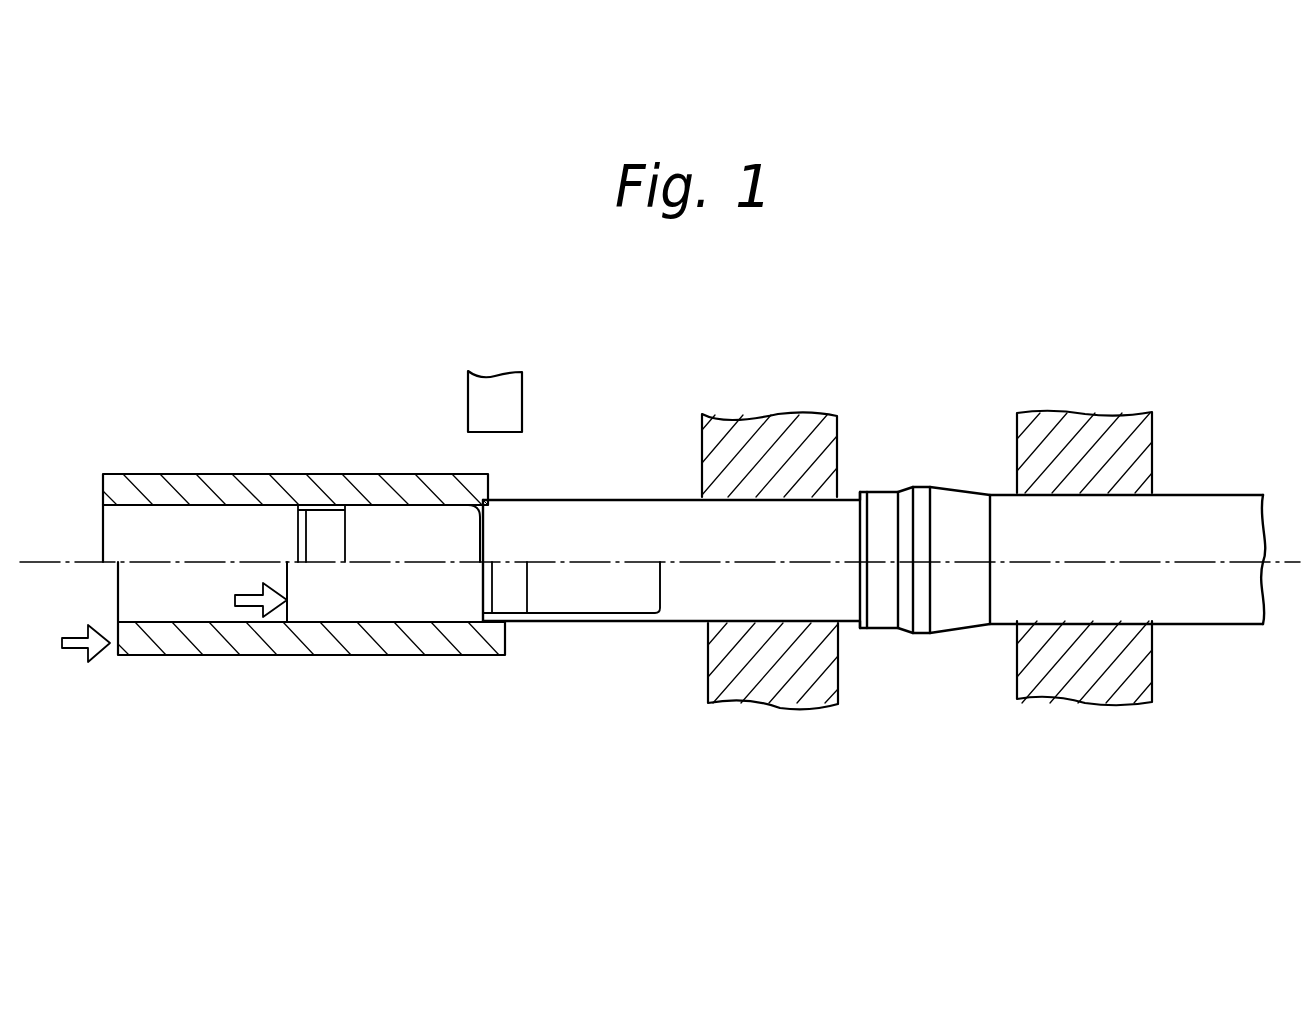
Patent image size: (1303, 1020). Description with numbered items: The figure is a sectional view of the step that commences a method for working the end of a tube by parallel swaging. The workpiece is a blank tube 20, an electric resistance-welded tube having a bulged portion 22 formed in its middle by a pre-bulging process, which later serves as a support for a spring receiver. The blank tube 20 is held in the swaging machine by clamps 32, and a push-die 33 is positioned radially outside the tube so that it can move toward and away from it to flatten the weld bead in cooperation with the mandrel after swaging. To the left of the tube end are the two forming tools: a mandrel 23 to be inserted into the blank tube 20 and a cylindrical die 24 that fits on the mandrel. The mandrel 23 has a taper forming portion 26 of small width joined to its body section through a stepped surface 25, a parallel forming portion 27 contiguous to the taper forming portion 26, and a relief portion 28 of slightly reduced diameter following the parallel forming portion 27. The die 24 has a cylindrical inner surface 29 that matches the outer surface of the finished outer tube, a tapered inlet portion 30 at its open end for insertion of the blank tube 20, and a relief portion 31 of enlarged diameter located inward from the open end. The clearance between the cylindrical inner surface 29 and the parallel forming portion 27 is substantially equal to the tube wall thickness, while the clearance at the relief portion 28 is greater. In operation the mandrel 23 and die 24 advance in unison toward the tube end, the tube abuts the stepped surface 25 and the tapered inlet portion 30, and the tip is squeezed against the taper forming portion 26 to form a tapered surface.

The blank tube 20 is at (1195, 490).
The bulged portion 22 is at (916, 634).
The mandrel 23 is at (255, 534).
The cylindrical die 24 is at (174, 476).
The stepped surface 25 is at (488, 577).
The taper forming portion 26 is at (485, 597).
The parallel forming portion 27 is at (518, 590).
The relief portion 28 is at (641, 595).
The cylindrical inner surface 29 is at (187, 623).
The tapered inlet portion 30 is at (483, 508).
The relief portion 31 is at (394, 524).
The clamps 32 is at (768, 413).
The push-die 33 is at (494, 393).